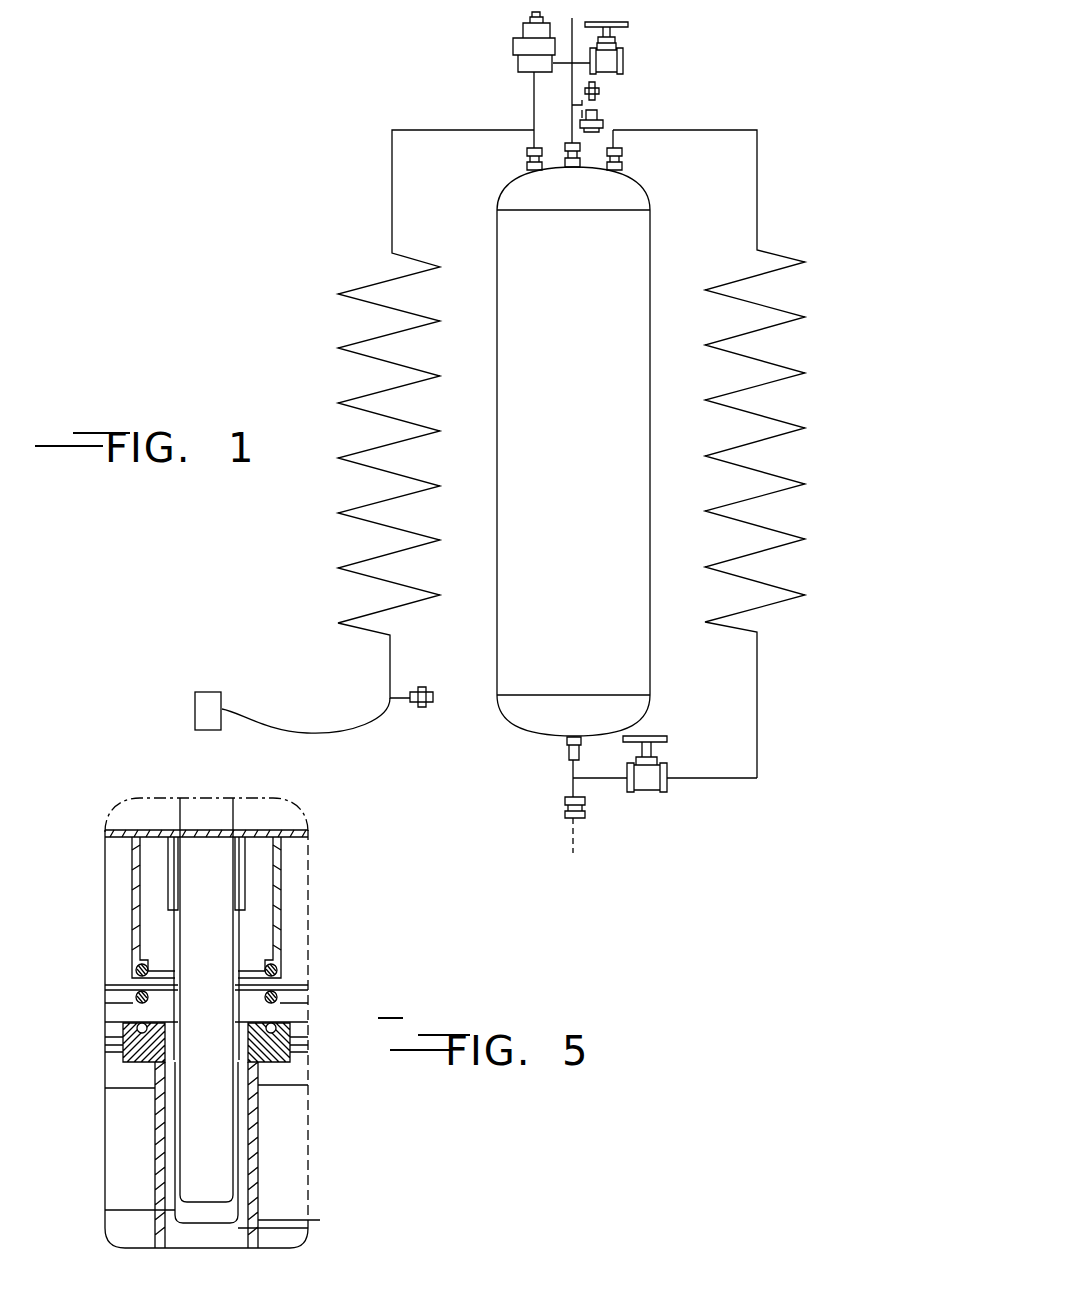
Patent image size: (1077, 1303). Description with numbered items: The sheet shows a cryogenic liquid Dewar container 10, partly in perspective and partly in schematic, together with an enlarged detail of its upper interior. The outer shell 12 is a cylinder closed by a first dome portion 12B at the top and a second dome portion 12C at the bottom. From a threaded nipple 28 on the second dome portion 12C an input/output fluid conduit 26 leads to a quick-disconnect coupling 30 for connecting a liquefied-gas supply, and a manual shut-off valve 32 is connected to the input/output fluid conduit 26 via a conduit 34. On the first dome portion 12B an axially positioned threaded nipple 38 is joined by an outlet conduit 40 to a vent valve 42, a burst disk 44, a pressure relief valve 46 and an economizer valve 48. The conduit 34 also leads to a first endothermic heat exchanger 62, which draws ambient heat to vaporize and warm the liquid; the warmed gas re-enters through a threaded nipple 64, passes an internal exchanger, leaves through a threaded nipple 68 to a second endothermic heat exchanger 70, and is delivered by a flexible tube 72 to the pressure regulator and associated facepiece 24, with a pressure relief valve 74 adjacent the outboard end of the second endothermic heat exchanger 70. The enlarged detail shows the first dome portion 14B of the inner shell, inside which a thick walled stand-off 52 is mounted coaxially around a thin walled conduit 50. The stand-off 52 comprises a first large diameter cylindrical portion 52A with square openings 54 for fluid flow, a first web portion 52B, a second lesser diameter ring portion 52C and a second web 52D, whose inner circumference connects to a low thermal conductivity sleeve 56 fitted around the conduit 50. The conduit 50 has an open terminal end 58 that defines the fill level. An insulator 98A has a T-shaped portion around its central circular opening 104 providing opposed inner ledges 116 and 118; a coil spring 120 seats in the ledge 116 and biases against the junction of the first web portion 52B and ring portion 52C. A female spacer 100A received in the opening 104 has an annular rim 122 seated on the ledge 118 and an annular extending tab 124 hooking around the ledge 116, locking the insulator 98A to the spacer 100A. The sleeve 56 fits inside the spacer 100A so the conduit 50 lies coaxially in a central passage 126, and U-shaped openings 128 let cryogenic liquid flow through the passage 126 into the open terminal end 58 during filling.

In FIG. 1, the cryogenic liquid Dewar container 10 is at (745, 103).
In FIG. 1, the outer shell 12 is at (652, 262).
In FIG. 1, the first dome portion 12B is at (652, 190).
In FIG. 1, the second dome portion 12C is at (642, 715).
In FIG. 5, the first dome portion of inner shell 14B is at (290, 823).
In FIG. 1, the pressure regulator and associated facepiece 24 is at (208, 700).
In FIG. 1, the input/output fluid conduit 26 is at (570, 770).
In FIG. 1, the threaded nipple 28 is at (565, 745).
In FIG. 1, the quick-disconnect coupling 30 is at (565, 815).
In FIG. 1, the manual shut-off valve 32 is at (650, 790).
In FIG. 1, the conduit 34 is at (605, 778).
In FIG. 1, the threaded nipple 38 is at (560, 152).
In FIG. 1, the outlet conduit 40 is at (572, 90).
In FIG. 1, the vent valve 42 is at (622, 47).
In FIG. 1, the burst disk 44 is at (607, 123).
In FIG. 1, the pressure relief valve 46 is at (600, 90).
In FIG. 1, the economizer valve 48 is at (513, 50).
In FIG. 5, the conduit 50 is at (245, 905).
In FIG. 5, the stand-off 52 is at (122, 892).
In FIG. 5, the first large diameter cylindrical portion 52A is at (281, 885).
In FIG. 5, the first web portion 52B is at (262, 955).
In FIG. 5, the second lesser diameter ring portion 52C is at (228, 962).
In FIG. 5, the second web 52D is at (278, 970).
In FIG. 5, the openings 54 is at (233, 848).
In FIG. 5, the low thermal conductivity sleeve 56 is at (265, 1065).
In FIG. 5, the open terminal end 58 is at (197, 1248).
In FIG. 1, the first endothermic heat exchanger 62 is at (785, 600).
In FIG. 1, the threaded nipple 64 is at (625, 162).
In FIG. 1, the threaded nipple 68 is at (528, 165).
In FIG. 1, the second endothermic heat exchanger 70 is at (343, 520).
In FIG. 1, the flexible tube 72 is at (290, 730).
In FIG. 1, the pressure relief valve 74 is at (420, 690).
In FIG. 5, the insulator 98A is at (290, 1040).
In FIG. 5, the female spacer 100A is at (157, 1125).
In FIG. 5, the central circular opening 104 is at (130, 1095).
In FIG. 5, the inner ledge 116 is at (160, 1022).
In FIG. 5, the inner ledge 118 is at (133, 1062).
In FIG. 5, the coil spring 120 is at (103, 997).
In FIG. 5, the annular rim 122 is at (280, 1047).
In FIG. 5, the annular extending tab 124 is at (278, 997).
In FIG. 5, the central passage 126 is at (182, 1238).
In FIG. 5, the U-shaped openings 128 is at (258, 1182).